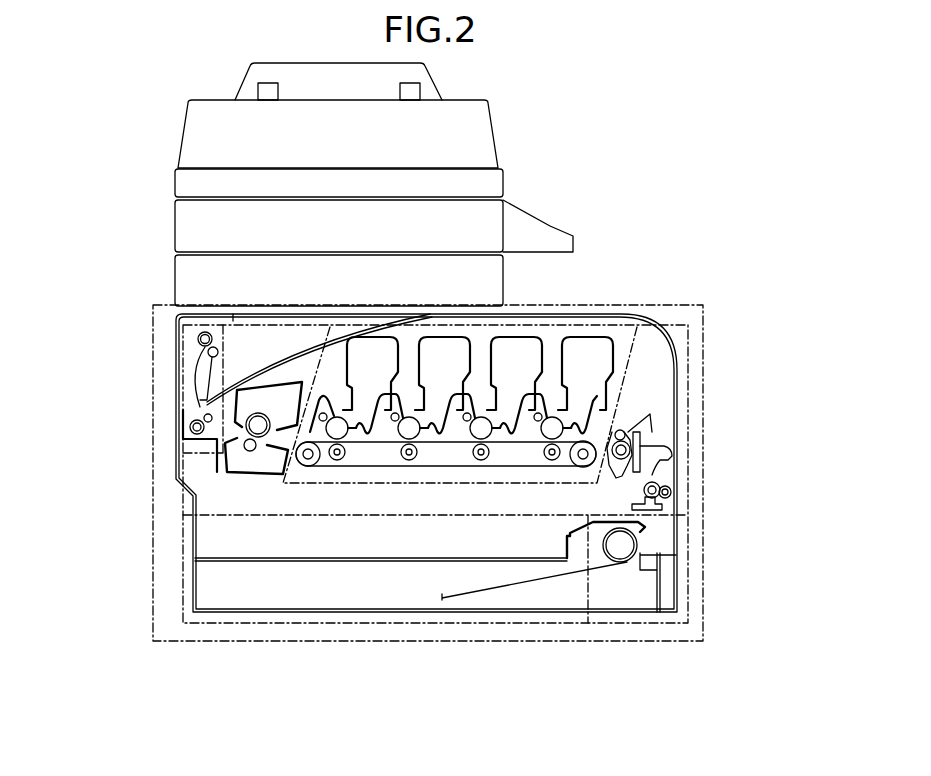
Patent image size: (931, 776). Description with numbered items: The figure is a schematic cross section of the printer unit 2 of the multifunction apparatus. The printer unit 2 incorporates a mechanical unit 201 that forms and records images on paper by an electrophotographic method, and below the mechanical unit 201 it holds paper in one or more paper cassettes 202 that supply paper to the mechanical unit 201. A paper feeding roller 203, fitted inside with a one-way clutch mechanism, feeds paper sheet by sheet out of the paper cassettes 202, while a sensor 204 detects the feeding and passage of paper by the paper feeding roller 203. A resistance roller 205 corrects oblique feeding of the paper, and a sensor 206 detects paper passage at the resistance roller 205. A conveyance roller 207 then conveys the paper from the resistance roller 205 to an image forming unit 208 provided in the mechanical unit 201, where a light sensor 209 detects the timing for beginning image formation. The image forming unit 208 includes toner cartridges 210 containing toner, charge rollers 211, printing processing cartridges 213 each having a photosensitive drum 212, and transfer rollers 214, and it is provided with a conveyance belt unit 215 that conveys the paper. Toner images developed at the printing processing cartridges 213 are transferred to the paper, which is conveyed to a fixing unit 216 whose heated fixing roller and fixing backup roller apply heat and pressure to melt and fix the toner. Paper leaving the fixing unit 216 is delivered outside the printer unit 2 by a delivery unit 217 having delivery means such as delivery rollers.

The printer unit 2 is at (672, 305).
The mechanical unit 201 is at (690, 343).
The paper cassettes 202 is at (478, 628).
The paper feeding roller 203 is at (630, 546).
The sensor 204 is at (671, 500).
The resistance roller 205 is at (660, 494).
The sensor 206 is at (631, 452).
The conveyance roller 207 is at (626, 430).
The image forming unit 208 is at (624, 383).
The light sensor 209 is at (655, 470).
The toner cartridges 210 is at (378, 338).
The charge rollers 211 is at (323, 421).
The photosensitive drum 212 is at (332, 435).
The printing processing cartridges 213 is at (399, 356).
The transfer rollers 214 is at (337, 460).
The conveyance belt unit 215 is at (578, 467).
The fixing unit 216 is at (247, 474).
The delivery unit 217 is at (207, 330).